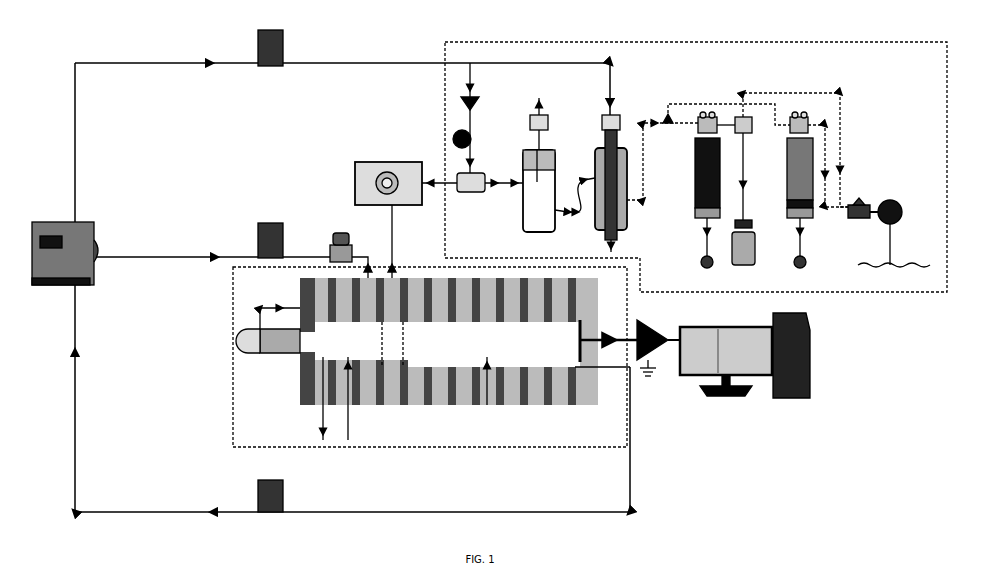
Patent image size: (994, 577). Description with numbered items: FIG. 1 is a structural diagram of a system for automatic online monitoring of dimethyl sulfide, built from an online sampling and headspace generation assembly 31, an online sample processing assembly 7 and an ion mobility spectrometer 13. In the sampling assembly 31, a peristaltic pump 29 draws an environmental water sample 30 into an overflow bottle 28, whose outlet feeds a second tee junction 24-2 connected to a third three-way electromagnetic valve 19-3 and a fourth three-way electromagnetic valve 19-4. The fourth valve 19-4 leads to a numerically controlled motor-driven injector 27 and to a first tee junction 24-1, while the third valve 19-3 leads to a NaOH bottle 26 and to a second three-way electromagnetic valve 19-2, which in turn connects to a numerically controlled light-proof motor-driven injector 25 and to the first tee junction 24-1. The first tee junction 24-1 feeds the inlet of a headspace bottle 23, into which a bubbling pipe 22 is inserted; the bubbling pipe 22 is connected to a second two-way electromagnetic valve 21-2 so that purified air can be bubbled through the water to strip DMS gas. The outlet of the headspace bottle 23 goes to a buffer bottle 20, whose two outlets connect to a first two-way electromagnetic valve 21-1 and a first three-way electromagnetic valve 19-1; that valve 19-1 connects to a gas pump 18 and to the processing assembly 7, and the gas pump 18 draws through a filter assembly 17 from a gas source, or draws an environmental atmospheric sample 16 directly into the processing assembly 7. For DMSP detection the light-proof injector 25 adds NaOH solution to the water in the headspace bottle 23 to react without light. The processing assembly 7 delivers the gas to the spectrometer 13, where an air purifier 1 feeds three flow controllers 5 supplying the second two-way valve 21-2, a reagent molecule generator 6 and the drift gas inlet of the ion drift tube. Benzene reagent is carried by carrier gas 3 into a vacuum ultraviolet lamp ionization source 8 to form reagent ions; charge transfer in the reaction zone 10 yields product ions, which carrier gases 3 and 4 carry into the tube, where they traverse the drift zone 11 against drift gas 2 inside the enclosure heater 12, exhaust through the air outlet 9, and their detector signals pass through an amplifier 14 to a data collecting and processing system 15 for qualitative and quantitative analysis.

The air purifier 1 is at (65, 244).
The drift gas 2 is at (352, 287).
The carrier gas 3 is at (233, 281).
The carrier gas 4 is at (342, 81).
The flow controller 5 is at (270, 265).
The reagent molecule generator 6 is at (341, 240).
The online sample processing assembly 7 is at (388, 232).
The vacuum ultraviolet lamp ionization source 8 is at (268, 340).
The air outlet 9 is at (315, 398).
The reaction zone 10 is at (348, 398).
The drift zone 11 is at (485, 392).
The enclosure heater 12 is at (465, 349).
The ion mobility spectrometer 13 is at (430, 367).
The amplifier 14 is at (630, 340).
The data collecting and processing system 15 is at (745, 367).
The environmental atmospheric sample 16 is at (474, 80).
The filter assembly 17 is at (478, 112).
The gas pump 18 is at (474, 151).
The first three-way electromagnetic valve 19-1 is at (472, 190).
The second three-way electromagnetic valve 19-2 is at (707, 117).
The third three-way electromagnetic valve 19-3 is at (778, 156).
The fourth three-way electromagnetic valve 19-4 is at (819, 154).
The buffer bottle 20 is at (539, 199).
The first two-way electromagnetic valve 21-1 is at (552, 124).
The second two-way electromagnetic valve 21-2 is at (625, 122).
The bubbling pipe 22 is at (591, 199).
The headspace bottle 23 is at (625, 191).
The first tee junction 24-1 is at (708, 152).
The second tee junction 24-2 is at (837, 217).
The numerically controlled light-proof motor-driven injector 25 is at (707, 211).
The NaOH bottle 26 is at (743, 249).
The numerically controlled motor-driven injector 27 is at (800, 211).
The overflow bottle 28 is at (859, 201).
The peristaltic pump 29 is at (895, 232).
The environmental water sample 30 is at (894, 259).
The online sampling and headspace generation assembly 31 is at (696, 156).